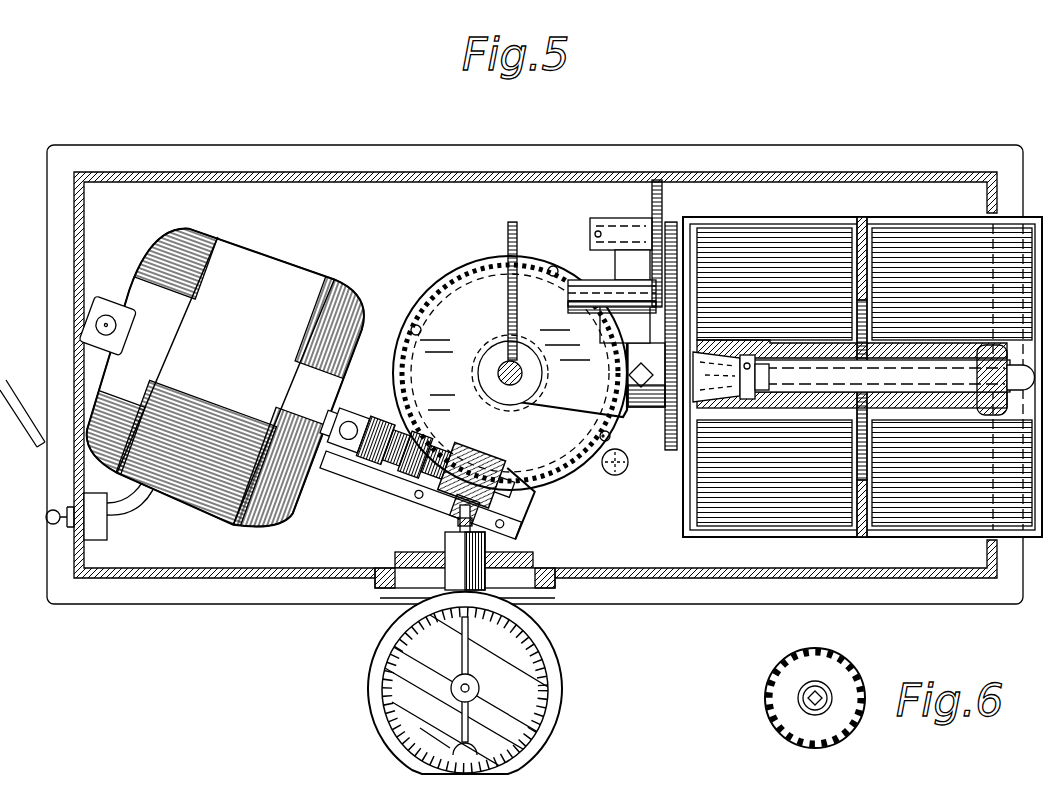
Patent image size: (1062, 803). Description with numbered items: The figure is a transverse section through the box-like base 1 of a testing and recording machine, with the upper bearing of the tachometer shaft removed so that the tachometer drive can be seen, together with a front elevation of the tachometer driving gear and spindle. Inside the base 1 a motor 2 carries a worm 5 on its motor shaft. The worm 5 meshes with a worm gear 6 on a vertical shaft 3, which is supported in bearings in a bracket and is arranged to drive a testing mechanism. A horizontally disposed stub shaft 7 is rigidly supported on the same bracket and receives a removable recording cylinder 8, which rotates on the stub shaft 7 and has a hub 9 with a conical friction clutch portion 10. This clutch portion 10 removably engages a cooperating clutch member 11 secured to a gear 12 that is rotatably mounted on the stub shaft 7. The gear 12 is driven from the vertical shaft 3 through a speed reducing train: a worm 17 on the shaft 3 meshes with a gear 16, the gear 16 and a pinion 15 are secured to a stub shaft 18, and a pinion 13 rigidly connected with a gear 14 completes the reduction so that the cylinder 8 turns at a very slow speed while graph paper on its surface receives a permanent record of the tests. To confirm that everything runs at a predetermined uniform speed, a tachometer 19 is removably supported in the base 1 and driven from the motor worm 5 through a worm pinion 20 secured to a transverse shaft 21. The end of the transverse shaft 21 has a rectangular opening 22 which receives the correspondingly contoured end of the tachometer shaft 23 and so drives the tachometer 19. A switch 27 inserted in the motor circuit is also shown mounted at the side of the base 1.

In FIG. 5, the box-like base 1 is at (830, 166).
In FIG. 5, the motor 2 is at (196, 490).
In FIG. 5, the vertical shaft 3 is at (502, 382).
In FIG. 5, the worm 5 is at (522, 505).
In FIG. 5, the worm gear 6 is at (560, 468).
In FIG. 5, the stub shaft 7 is at (840, 390).
In FIG. 5, the recording cylinder 8 is at (1030, 216).
In FIG. 5, the hub 9 is at (928, 396).
In FIG. 5, the conical friction clutch portion 10 is at (762, 402).
In FIG. 5, the clutch member 11 is at (748, 402).
In FIG. 5, the gear 12 is at (712, 402).
In FIG. 5, the pinion 13 is at (671, 226).
In FIG. 5, the gear 14 is at (660, 180).
In FIG. 5, the pinion 15 is at (628, 282).
In FIG. 5, the gear 16 is at (508, 224).
In FIG. 5, the worm 17 is at (500, 372).
In FIG. 5, the stub shaft 18 is at (498, 310).
In FIG. 5, the tachometer 19 is at (562, 676).
In FIG. 5, the worm pinion 20 is at (446, 498).
In FIG. 6, the worm pinion 20 is at (850, 664).
In FIG. 5, the transverse shaft 21 is at (458, 516).
In FIG. 6, the rectangular opening 22 is at (798, 698).
In FIG. 5, the tachometer shaft 23 is at (445, 536).
In FIG. 5, the switch 27 is at (46, 517).